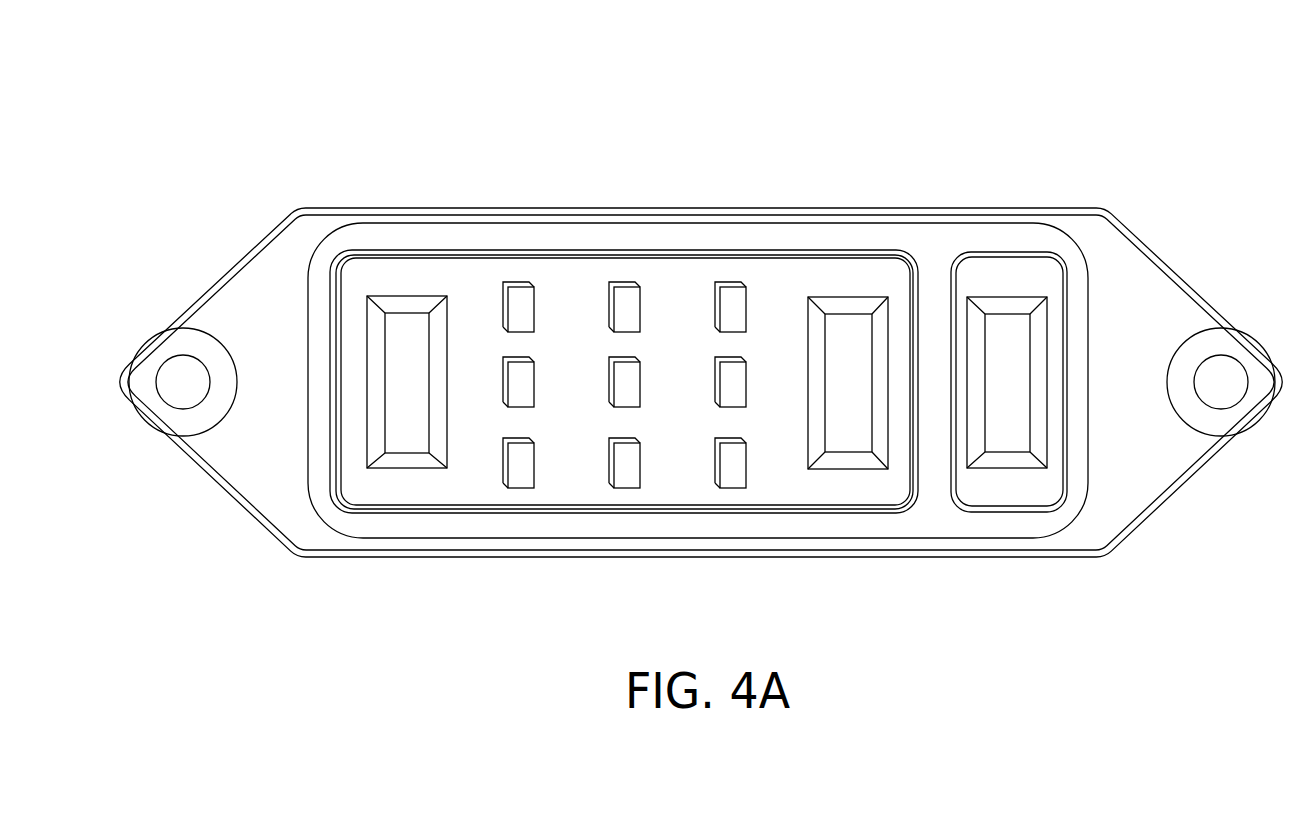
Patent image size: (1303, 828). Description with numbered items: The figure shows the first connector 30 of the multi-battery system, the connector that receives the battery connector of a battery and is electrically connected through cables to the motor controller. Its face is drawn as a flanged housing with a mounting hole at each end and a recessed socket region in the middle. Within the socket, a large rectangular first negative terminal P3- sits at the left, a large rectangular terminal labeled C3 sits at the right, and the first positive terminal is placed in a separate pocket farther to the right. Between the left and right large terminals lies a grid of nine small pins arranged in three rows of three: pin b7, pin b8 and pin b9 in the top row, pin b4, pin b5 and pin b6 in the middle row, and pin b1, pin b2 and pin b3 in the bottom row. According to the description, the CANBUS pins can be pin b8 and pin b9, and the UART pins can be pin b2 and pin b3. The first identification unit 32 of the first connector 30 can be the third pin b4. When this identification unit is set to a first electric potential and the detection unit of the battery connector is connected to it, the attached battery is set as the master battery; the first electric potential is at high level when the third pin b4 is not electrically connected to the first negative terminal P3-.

The first connector 30 is at (1118, 97).
The first identification unit 32 is at (620, 442).
The first negative terminal P3- is at (402, 332).
The control terminal slot C3 is at (851, 332).
The terminal b1 is at (539, 463).
The UART pin b2 is at (645, 463).
The UART pin b3 is at (751, 463).
The third pin b4 is at (539, 382).
The terminal b5 is at (645, 382).
The terminal b6 is at (751, 382).
The terminal b7 is at (539, 307).
The CANBUS pin b8 is at (645, 307).
The CANBUS pin b9 is at (751, 307).